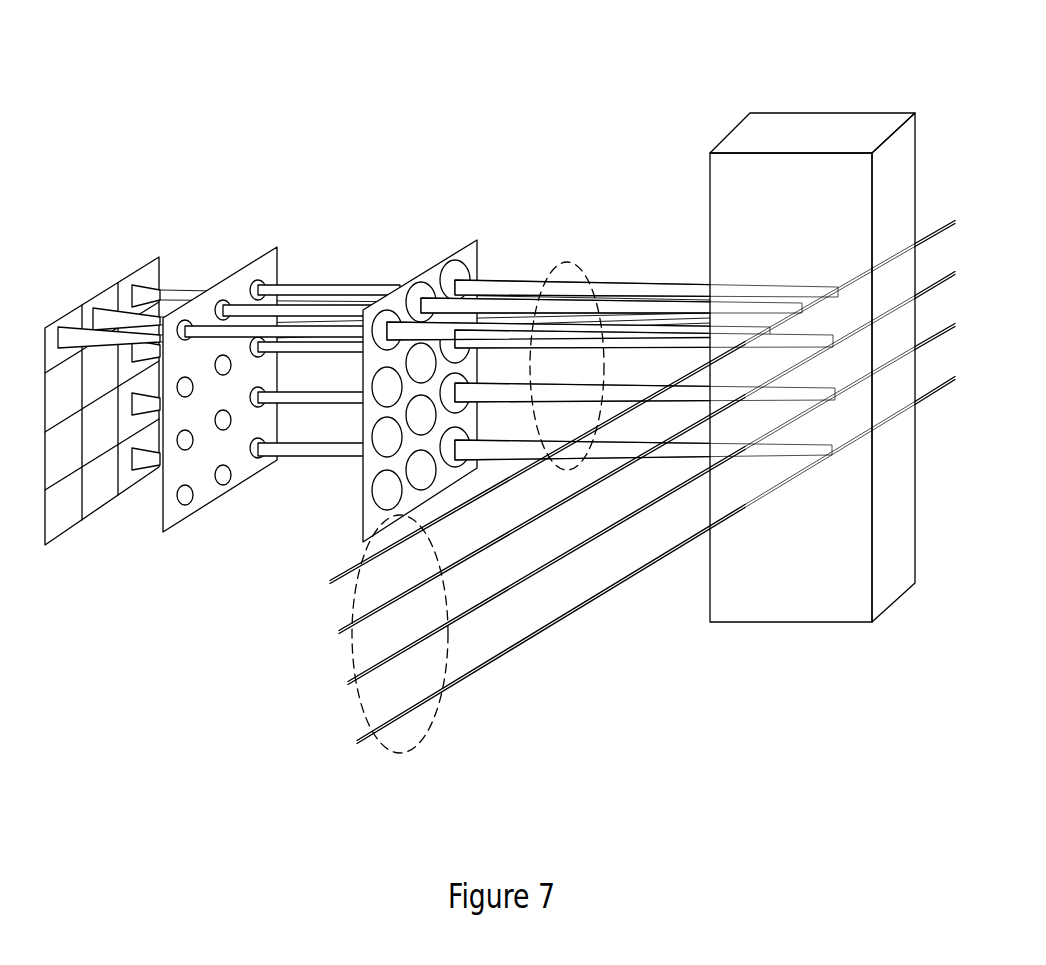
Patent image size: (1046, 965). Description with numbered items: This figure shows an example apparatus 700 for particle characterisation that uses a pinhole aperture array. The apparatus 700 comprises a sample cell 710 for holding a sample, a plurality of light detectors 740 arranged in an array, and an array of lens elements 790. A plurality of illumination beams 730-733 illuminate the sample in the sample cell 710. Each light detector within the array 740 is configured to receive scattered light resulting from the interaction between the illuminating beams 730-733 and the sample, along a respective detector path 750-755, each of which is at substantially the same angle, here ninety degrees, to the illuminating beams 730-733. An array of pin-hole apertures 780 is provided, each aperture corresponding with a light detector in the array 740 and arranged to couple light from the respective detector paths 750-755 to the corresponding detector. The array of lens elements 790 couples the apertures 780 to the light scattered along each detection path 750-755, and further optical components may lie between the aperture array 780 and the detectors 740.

The apparatus 700 is at (262, 74).
The sample cell 710 is at (790, 625).
The illumination beams 730-733 is at (410, 749).
The light detectors 740 is at (102, 286).
The detector paths 750-755 is at (565, 262).
The pin-hole apertures 780 is at (274, 248).
The lens elements 790 is at (428, 268).